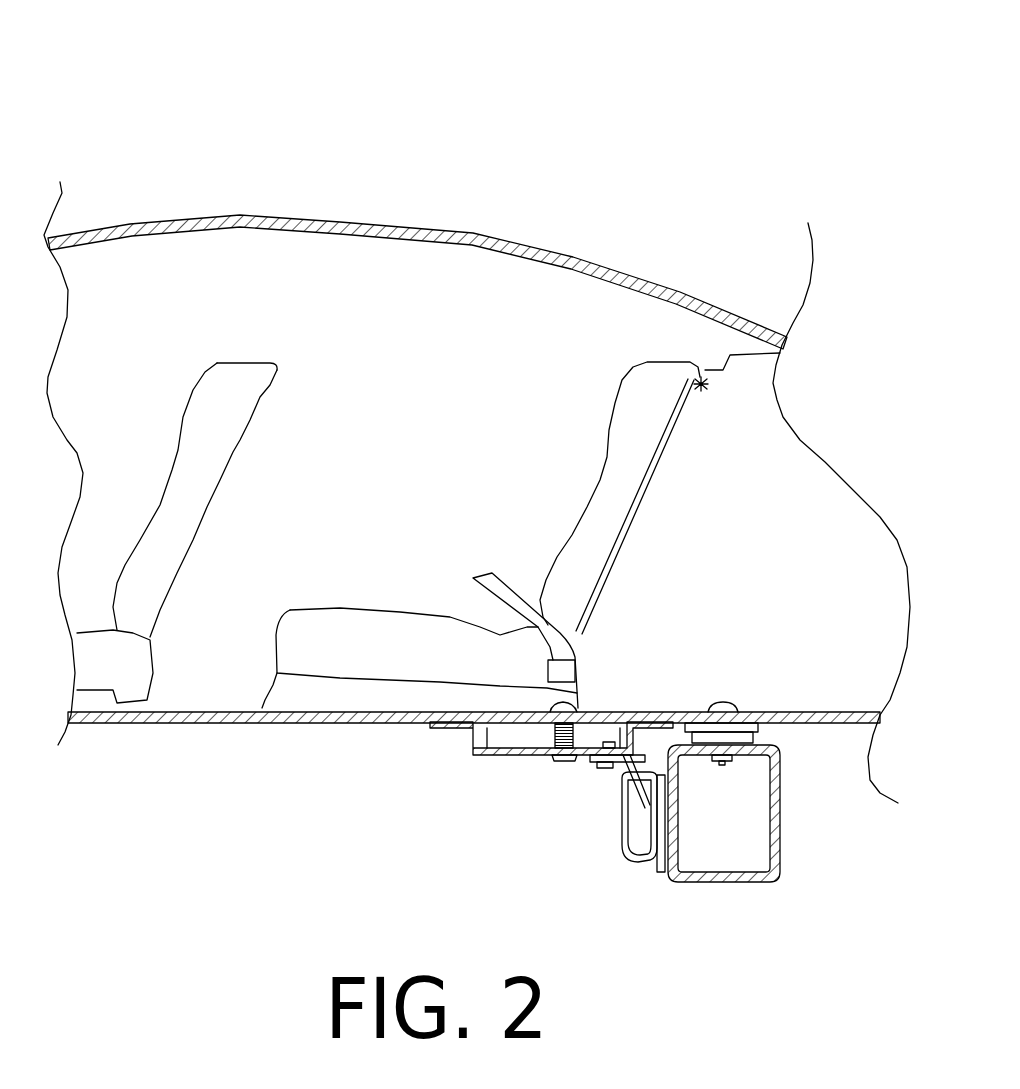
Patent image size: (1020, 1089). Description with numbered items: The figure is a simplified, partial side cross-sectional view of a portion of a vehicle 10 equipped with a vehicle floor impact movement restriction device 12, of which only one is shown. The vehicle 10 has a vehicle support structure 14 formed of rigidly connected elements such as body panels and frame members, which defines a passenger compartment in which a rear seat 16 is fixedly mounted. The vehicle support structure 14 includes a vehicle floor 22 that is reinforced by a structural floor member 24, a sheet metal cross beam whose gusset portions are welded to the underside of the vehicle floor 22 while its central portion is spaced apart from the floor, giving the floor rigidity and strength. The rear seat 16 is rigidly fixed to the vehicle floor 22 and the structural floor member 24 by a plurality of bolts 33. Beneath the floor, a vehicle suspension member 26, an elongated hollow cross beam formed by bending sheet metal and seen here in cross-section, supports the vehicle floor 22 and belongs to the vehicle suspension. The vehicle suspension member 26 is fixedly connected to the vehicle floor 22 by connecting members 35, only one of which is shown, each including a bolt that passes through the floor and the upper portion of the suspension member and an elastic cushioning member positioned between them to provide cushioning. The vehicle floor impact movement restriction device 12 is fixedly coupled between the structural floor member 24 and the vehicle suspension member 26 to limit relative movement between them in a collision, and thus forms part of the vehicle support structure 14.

The vehicle 10 is at (345, 132).
The vehicle floor impact movement restriction device 12 is at (600, 857).
The vehicle support structure 14 is at (478, 212).
The rear seat 16 is at (630, 407).
The vehicle floor 22 is at (474, 774).
The structural floor member 24 is at (510, 783).
The vehicle suspension member 26 is at (780, 833).
The bolts 33 is at (566, 763).
The connecting members 35 is at (782, 735).